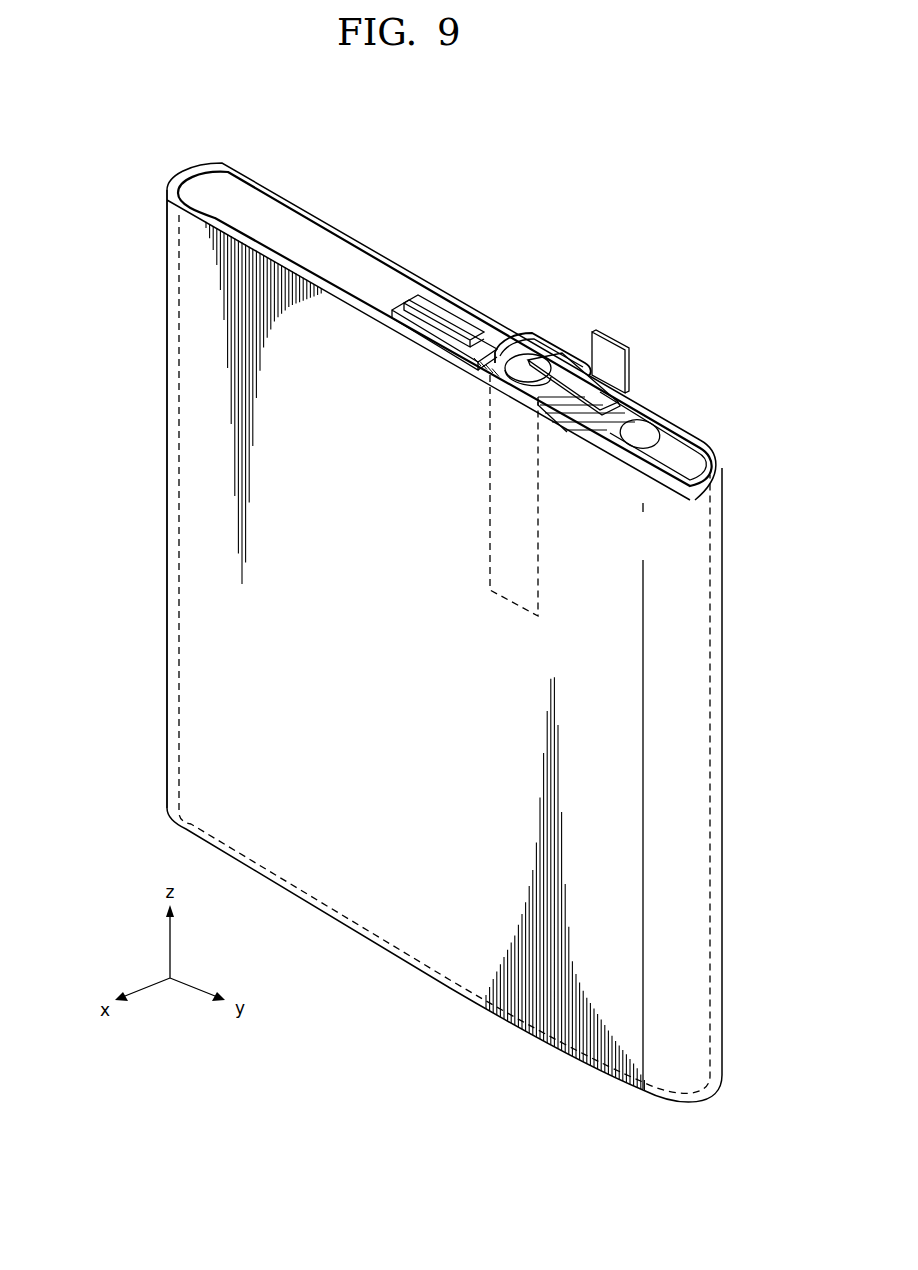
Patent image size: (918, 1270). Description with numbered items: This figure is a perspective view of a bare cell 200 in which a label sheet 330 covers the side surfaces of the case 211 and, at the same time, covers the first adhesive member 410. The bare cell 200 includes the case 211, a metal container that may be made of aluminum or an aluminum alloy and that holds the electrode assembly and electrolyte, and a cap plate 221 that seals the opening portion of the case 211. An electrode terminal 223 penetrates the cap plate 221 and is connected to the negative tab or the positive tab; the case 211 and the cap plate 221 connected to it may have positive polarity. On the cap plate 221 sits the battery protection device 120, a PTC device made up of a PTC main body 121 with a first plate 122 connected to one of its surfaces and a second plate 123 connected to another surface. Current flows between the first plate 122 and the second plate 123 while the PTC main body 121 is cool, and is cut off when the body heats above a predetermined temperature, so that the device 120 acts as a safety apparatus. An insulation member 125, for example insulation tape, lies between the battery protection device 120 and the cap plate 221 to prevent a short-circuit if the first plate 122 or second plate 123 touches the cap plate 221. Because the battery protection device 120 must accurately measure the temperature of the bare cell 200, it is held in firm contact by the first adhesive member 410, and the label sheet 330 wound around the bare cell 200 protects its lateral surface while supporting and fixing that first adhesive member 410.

The bare cell 200 is at (168, 508).
The cap plate 221 is at (216, 188).
The electrode terminal 223 is at (409, 296).
The battery protection device 120 is at (532, 195).
The PTC main body 121 is at (541, 350).
The first plate 122 is at (492, 320).
The second plate 123 is at (610, 350).
The insulation member 125 is at (640, 404).
The label sheet 330 is at (167, 615).
The case 211 is at (180, 764).
The first adhesive member 410 is at (489, 584).